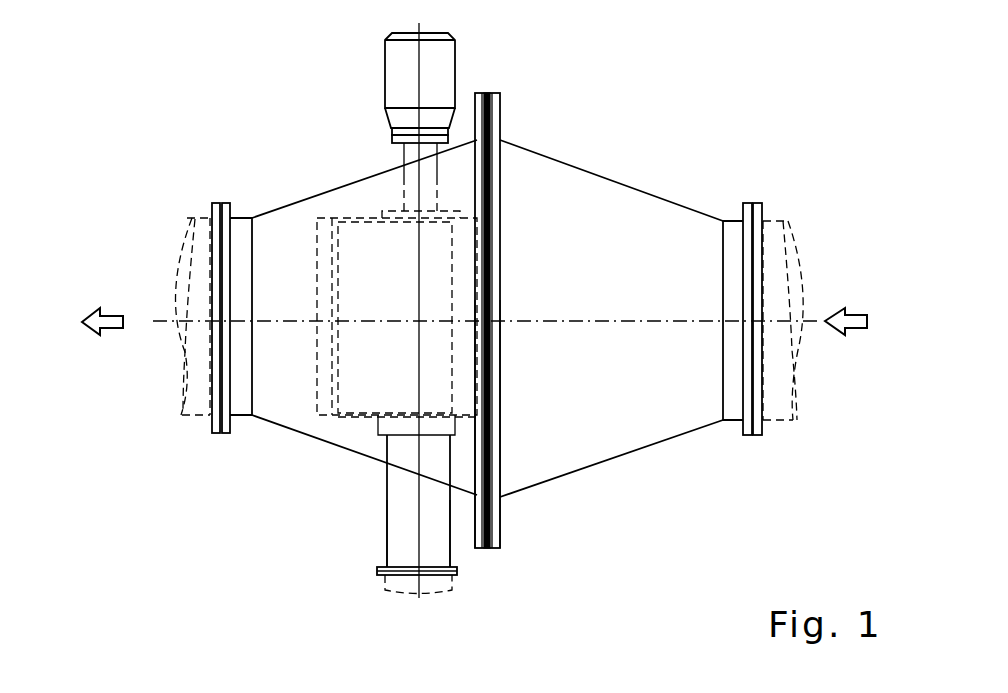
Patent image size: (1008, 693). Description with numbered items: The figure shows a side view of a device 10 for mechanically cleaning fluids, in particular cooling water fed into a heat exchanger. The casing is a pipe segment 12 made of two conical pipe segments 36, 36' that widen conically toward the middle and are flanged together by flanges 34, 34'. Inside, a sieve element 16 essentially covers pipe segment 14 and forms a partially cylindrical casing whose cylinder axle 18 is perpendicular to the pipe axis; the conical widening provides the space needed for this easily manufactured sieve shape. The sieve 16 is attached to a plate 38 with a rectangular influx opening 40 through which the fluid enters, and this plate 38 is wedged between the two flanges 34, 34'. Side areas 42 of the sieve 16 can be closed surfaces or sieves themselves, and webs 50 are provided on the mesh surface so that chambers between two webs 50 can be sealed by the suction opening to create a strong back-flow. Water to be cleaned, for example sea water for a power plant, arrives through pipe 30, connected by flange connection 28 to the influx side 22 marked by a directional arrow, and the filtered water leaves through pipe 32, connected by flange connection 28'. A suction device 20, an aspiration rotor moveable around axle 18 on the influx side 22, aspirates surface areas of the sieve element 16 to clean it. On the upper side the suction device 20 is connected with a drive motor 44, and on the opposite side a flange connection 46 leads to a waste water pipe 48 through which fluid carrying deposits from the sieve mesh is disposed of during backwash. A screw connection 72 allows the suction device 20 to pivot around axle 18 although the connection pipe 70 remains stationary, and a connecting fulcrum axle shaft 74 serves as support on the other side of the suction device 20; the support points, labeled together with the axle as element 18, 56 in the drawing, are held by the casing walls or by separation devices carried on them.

The device 10 is at (852, 47).
The pipe segment 12 is at (628, 186).
The pipe segment 14 is at (200, 400).
The sieve element 16 is at (317, 380).
The axle 18 is at (375, 550).
The suction device 20 is at (333, 407).
The influx side 22 is at (862, 310).
The flange connection 28 is at (781, 263).
The flange connection 28' is at (186, 262).
The pipe 30 is at (780, 407).
The pipe 32 is at (187, 417).
The flange 34 is at (519, 475).
The flange 34' is at (475, 475).
The conical pipe segment 36 is at (611, 294).
The conical pipe segment 36' is at (364, 293).
The plate 38 is at (528, 372).
The rectangular influx opening 40 is at (584, 372).
The side areas 42 is at (353, 387).
The drive motor 44 is at (443, 60).
The flange connection 46 is at (378, 577).
The waste water pipe 48 is at (388, 592).
The webs 50 is at (327, 237).
The shaft seal 56 is at (375, 550).
The connection pipe 70 is at (400, 508).
The lower shaft step 72 is at (506, 532).
The connecting fulcrum axle shaft 74 is at (387, 151).